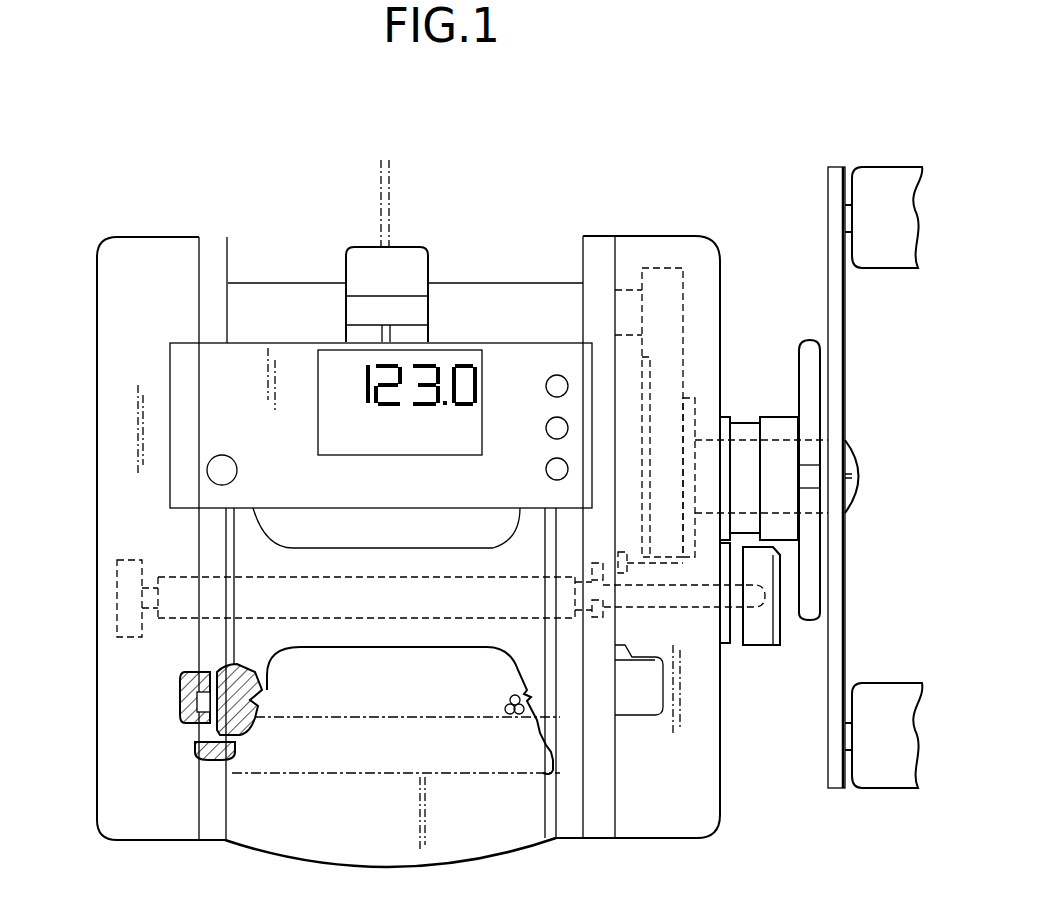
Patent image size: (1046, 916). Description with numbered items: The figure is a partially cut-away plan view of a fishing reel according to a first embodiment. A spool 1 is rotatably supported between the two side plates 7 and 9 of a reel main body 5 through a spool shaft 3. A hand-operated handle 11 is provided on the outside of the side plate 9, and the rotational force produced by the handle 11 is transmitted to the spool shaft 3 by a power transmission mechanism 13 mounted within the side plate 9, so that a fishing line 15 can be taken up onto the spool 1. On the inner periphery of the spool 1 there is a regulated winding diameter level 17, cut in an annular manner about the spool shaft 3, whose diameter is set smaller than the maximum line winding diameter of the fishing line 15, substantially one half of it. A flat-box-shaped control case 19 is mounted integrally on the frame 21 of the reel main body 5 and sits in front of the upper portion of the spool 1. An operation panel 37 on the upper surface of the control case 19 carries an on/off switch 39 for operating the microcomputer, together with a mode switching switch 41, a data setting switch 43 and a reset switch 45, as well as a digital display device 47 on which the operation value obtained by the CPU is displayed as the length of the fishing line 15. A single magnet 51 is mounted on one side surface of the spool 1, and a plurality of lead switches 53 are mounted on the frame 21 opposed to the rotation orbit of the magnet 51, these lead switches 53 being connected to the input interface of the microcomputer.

The spool 1 is at (245, 538).
The spool shaft 3 is at (285, 630).
The reel main body 5 is at (101, 232).
The side plate 7 is at (110, 284).
The side plate 9 is at (702, 717).
The hand-operated handle 11 is at (838, 381).
The power transmission mechanism 13 is at (672, 380).
The fishing line 15 is at (378, 206).
The regulated winding diameter level 17 is at (262, 696).
The control case 19 is at (250, 356).
The frame 21 is at (211, 246).
The operation panel 37 is at (175, 356).
The on/off switch 39 is at (223, 456).
The mode switching switch 41 is at (549, 387).
The data setting switch 43 is at (549, 430).
The reset switch 45 is at (549, 469).
The digital display device 47 is at (336, 356).
The magnet 51 is at (200, 740).
The lead switches 53 is at (180, 698).